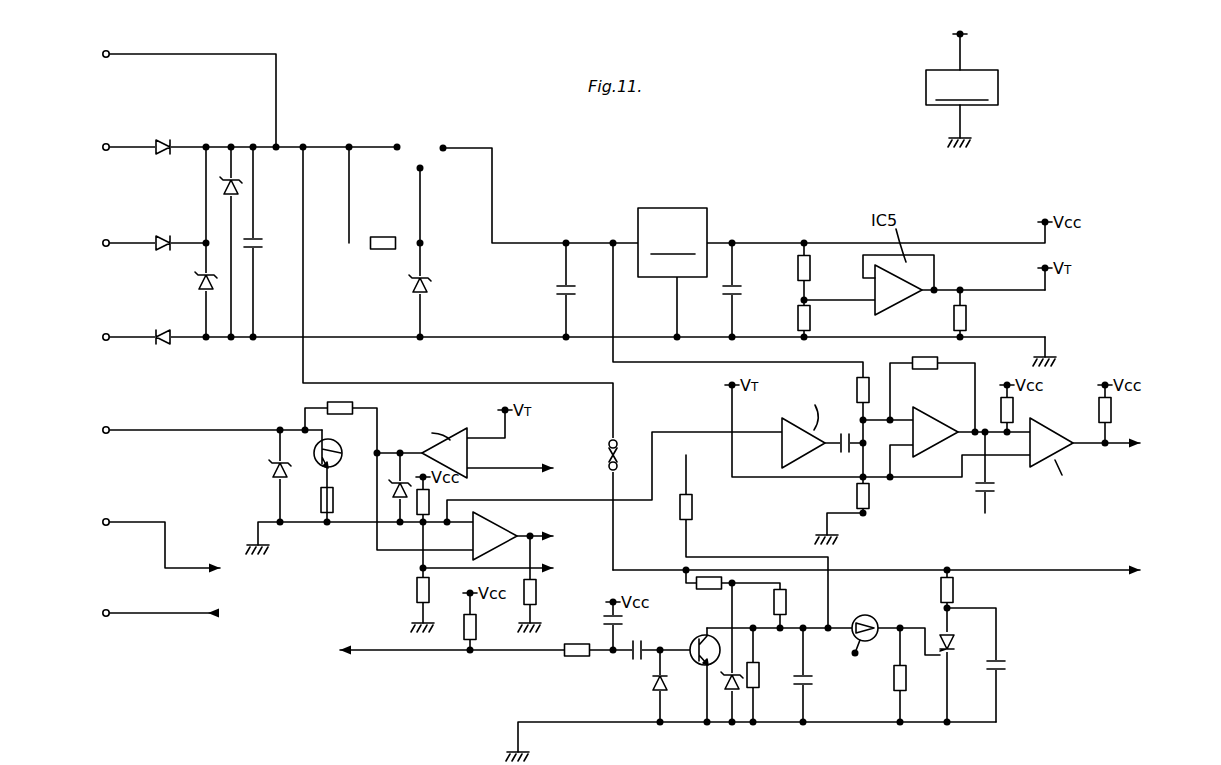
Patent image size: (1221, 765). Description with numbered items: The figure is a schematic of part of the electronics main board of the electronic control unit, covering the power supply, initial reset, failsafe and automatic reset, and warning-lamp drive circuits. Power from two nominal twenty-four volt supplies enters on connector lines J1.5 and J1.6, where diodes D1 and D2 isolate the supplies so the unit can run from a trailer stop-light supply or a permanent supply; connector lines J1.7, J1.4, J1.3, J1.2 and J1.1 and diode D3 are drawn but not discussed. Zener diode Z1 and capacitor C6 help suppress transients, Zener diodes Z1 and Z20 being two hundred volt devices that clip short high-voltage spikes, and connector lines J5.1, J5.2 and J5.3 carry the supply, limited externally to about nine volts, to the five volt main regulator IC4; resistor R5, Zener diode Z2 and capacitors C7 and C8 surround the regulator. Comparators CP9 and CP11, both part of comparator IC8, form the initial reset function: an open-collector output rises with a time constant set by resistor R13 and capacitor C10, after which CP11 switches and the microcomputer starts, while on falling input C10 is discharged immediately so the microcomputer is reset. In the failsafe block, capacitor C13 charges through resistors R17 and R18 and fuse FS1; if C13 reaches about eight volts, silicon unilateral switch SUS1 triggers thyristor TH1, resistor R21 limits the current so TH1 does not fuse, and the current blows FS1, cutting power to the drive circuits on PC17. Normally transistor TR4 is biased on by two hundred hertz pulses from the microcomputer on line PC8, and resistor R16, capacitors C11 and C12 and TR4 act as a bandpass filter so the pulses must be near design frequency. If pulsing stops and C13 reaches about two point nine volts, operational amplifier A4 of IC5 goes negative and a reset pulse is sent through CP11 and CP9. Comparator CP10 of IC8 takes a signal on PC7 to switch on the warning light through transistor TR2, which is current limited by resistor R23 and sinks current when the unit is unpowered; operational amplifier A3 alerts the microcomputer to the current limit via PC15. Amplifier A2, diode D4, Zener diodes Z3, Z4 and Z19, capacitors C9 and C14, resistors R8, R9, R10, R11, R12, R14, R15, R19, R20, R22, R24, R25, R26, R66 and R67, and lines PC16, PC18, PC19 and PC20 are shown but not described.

The connector J1 pin 7 J1.7 is at (89, 54).
The connector J1 line 6 J1.6 is at (89, 147).
The connector J1 line 5 J1.5 is at (89, 243).
The connector J1 pin 4 J1.4 is at (89, 337).
The connector J1 pin 3 J1.3 is at (89, 430).
The connector J1 pin 2 J1.2 is at (89, 522).
The connector J1 pin 1 J1.1 is at (89, 613).
The connector J5 line 1 J5.1 is at (442, 136).
The connector J5 line 2 J5.2 is at (391, 136).
The connector J5 line 3 J5.3 is at (438, 169).
The diode D1 is at (163, 138).
The diode D2 is at (163, 234).
The diode D3 is at (163, 328).
The diode D4 is at (646, 685).
The Zener diode Z1 is at (196, 282).
The zener diode Z2 is at (431, 285).
The zener diode Z3 is at (270, 471).
The zener diode Z4 is at (392, 490).
The zener diode Z19 is at (740, 688).
The Zener diode Z20 is at (240, 187).
The capacitor C6 is at (263, 244).
The capacitor C7 is at (573, 288).
The capacitor C8 is at (739, 288).
The capacitor C9 is at (844, 435).
The capacitor C10 is at (1001, 488).
The capacitor C11 is at (600, 621).
The capacitor C12 is at (639, 641).
The capacitor C13 is at (818, 676).
The capacitor C14 is at (1013, 666).
The resistor R5 is at (383, 233).
The resistor R8 is at (789, 268).
The resistor R9 is at (789, 318).
The resistor R10 is at (977, 318).
The resistor R11 is at (849, 390).
The resistor R12 is at (844, 496).
The resistor R13 is at (1024, 410).
The resistor R14 is at (1122, 410).
The resistor R15 is at (487, 627).
The resistor R16 is at (577, 660).
The resistor R17 is at (706, 593).
The resistor R18 is at (763, 602).
The resistor R19 is at (759, 680).
The resistor R20 is at (917, 678).
The resistor R21 is at (964, 590).
The resistor R22 is at (704, 507).
The resistor R23 is at (309, 500).
The resistor R24 is at (333, 401).
The resistor R25 is at (404, 592).
The resistor R26 is at (417, 513).
The resistor R66 is at (937, 359).
The resistor R67 is at (547, 593).
The main regulator IC4 is at (675, 256).
The integrated circuit IC5 is at (962, 86).
The comparator IC8 is at (946, 428).
The comparator A2 of IC5 A2 is at (954, 286).
The operational amplifier A3 is at (487, 534).
The operational amplifier A4 is at (803, 431).
The transistor TR2 is at (338, 474).
The transistor TR4 is at (693, 668).
The fuse FS1 is at (627, 445).
The silicon unilateral switch SUS1 is at (863, 631).
The thyristor TH1 is at (964, 644).
The comparator CP9 is at (932, 444).
The comparator CP10 is at (470, 453).
The comparator CP11 is at (1051, 444).
The line PC7 is at (565, 468).
The line PC8 is at (323, 650).
The line PC15 is at (570, 536).
The PC board connection PC16 is at (1158, 443).
The line PC17 is at (1158, 570).
The PC board connection PC18 is at (237, 568).
The PC board connection PC19 is at (237, 613).
The PC board connection PC20 is at (570, 568).